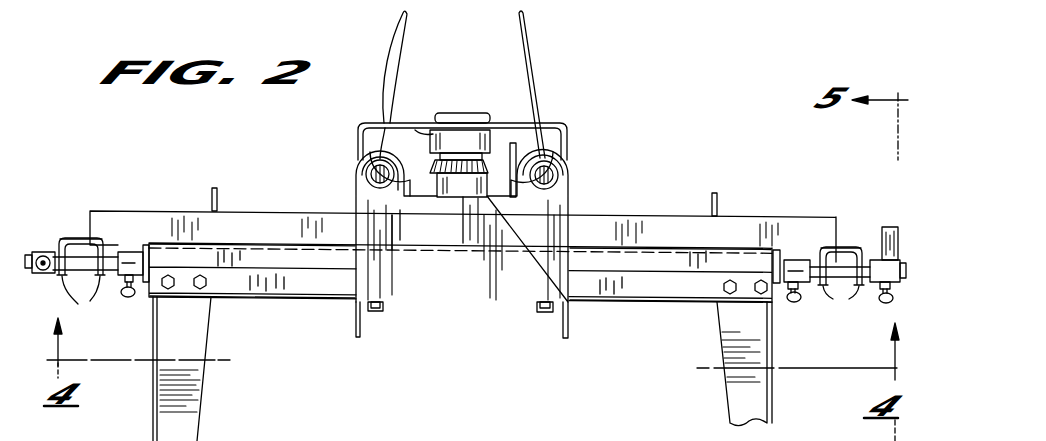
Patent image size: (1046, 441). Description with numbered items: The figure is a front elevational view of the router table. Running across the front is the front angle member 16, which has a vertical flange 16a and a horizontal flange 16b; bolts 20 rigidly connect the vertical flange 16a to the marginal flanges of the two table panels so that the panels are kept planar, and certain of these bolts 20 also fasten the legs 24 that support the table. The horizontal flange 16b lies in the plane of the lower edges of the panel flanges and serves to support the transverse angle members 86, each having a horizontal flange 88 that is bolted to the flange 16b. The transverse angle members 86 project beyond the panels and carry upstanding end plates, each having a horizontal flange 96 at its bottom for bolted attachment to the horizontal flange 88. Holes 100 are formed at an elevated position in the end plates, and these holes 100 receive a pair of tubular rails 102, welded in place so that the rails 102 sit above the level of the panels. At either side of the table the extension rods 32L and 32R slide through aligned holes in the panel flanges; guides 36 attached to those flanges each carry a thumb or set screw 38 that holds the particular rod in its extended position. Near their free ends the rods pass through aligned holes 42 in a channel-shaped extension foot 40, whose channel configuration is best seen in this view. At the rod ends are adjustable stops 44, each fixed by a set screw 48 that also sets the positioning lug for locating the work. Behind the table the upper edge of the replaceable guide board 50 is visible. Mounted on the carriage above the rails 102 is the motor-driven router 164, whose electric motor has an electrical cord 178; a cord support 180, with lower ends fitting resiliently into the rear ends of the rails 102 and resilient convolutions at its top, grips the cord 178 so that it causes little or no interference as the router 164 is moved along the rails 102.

The front angle member 16 is at (260, 306).
The vertical flange 16a is at (320, 284).
The horizontal flange 16b is at (638, 305).
The bolts 20 is at (173, 290).
The legs 24 is at (192, 405).
The extension rod 32L is at (78, 237).
The extension rod 32R is at (853, 247).
The guides 36 is at (130, 250).
The thumb or set screw 38 is at (128, 299).
The channel-shaped extension foot 40 is at (62, 238).
The aligned holes 42 is at (460, 301).
The adjustable stops 44 is at (42, 251).
The set screw 48 is at (43, 274).
The replaceable guide board 50 is at (607, 214).
The transverse angle members 86 is at (355, 347).
The horizontal flange 88 is at (388, 310).
The horizontal flange 96 is at (895, 227).
The holes 100 is at (391, 200).
The tubular rails 102 is at (357, 170).
The motor-driven router 164 is at (466, 108).
The electrical cord 178 is at (379, 62).
The cord support 180 is at (537, 82).